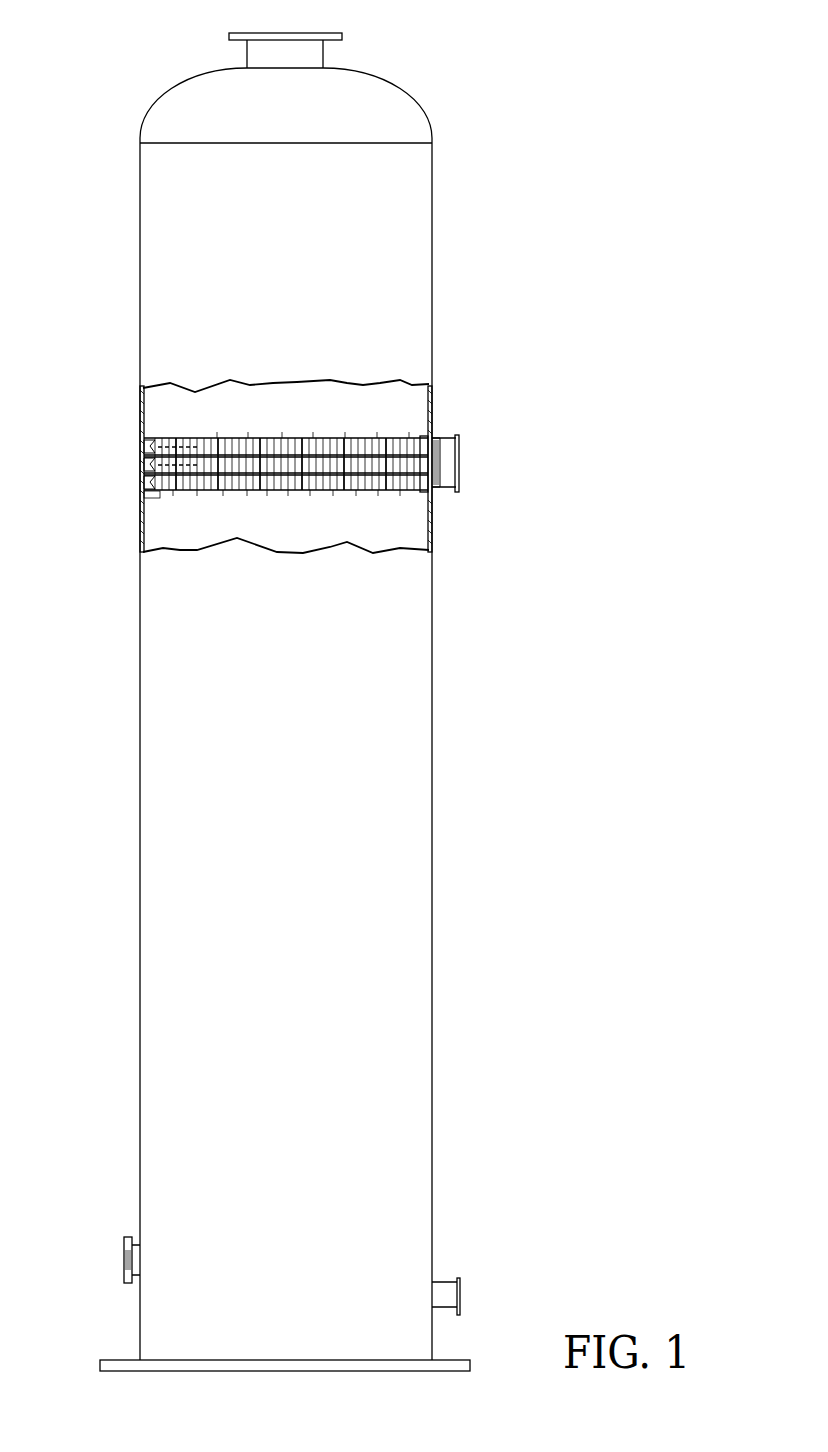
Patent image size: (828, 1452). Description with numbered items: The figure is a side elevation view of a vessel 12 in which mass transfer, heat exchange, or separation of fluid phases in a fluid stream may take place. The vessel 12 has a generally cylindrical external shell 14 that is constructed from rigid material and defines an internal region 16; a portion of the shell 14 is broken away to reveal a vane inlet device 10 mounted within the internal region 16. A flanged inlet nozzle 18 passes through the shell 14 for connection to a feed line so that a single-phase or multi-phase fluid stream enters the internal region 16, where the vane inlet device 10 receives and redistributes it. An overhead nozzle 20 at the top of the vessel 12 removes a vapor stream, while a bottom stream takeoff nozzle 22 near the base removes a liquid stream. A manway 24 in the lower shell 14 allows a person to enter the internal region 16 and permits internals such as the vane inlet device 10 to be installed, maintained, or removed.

The vane inlet device 10 is at (387, 497).
The vessel 12 is at (415, 320).
The external shell 14 is at (140, 422).
The internal region 16 is at (405, 407).
The flanged inlet nozzle 18 is at (445, 437).
The overhead nozzle 20 is at (330, 33).
The bottom stream takeoff nozzle 22 is at (443, 1282).
The manway 24 is at (130, 1237).